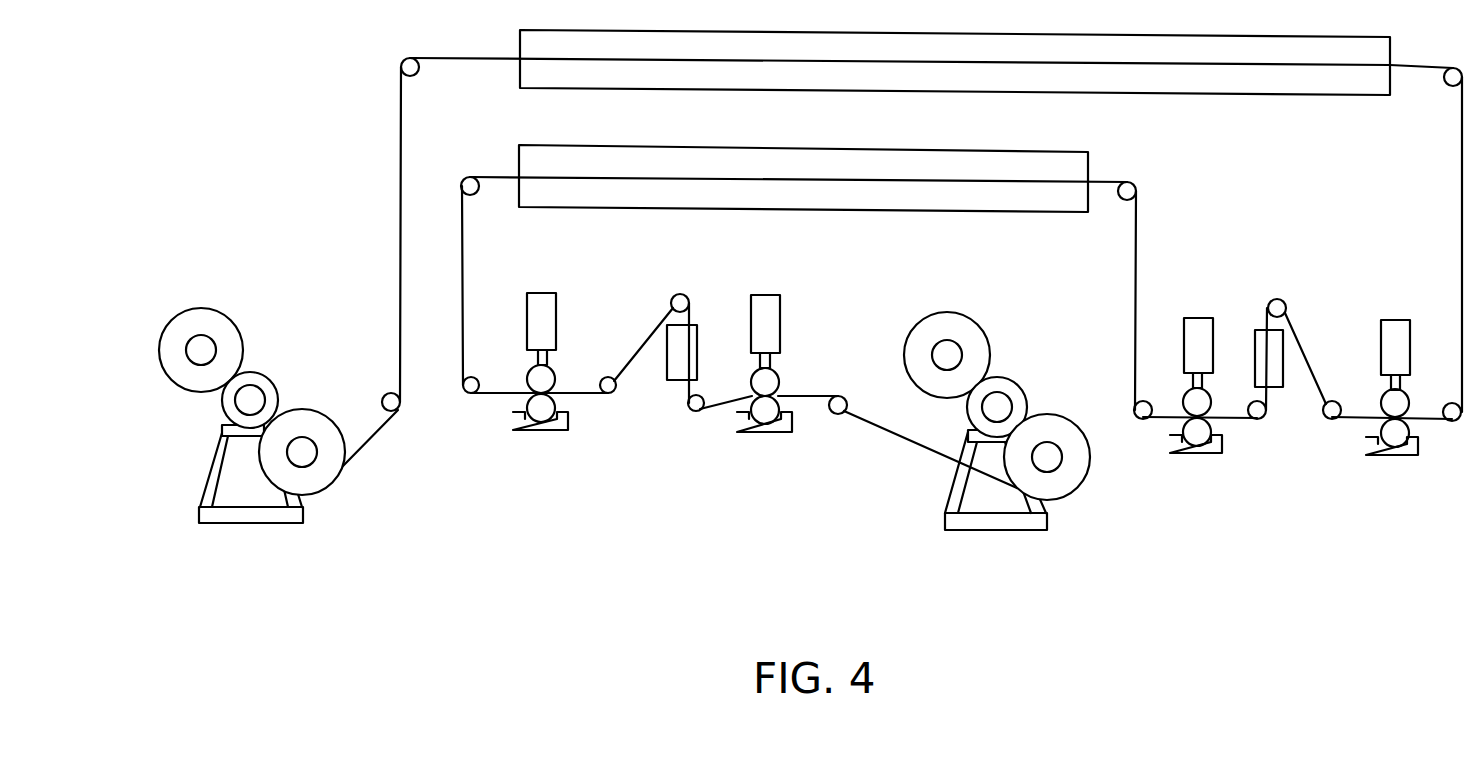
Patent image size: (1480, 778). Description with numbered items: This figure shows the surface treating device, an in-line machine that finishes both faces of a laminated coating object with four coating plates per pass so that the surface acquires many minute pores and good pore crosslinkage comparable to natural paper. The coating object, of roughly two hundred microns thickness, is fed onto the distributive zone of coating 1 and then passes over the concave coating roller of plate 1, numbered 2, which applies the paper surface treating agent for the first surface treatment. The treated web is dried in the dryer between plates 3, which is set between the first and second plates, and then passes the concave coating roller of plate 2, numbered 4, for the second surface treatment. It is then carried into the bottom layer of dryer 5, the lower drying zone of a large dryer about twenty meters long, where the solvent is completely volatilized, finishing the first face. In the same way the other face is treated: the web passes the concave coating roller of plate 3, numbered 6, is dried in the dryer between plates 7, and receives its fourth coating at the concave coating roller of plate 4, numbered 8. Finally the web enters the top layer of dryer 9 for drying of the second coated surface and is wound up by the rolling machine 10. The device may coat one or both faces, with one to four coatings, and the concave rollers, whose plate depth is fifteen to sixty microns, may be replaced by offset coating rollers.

The distributive zone of coating 1 is at (997, 421).
The concave coating roller of plate 1 2 is at (764, 398).
The dryer between plates 3 is at (669, 380).
The concave coating roller of plate 2 4 is at (541, 395).
The bottom layer of dryer 5 is at (803, 203).
The concave coating roller of plate 3 6 is at (1197, 413).
The dryer between plates 7 is at (1287, 374).
The concave coating roller of plate 4 8 is at (1392, 415).
The top layer of dryer 9 is at (955, 92).
The rolling machine 10 is at (246, 415).